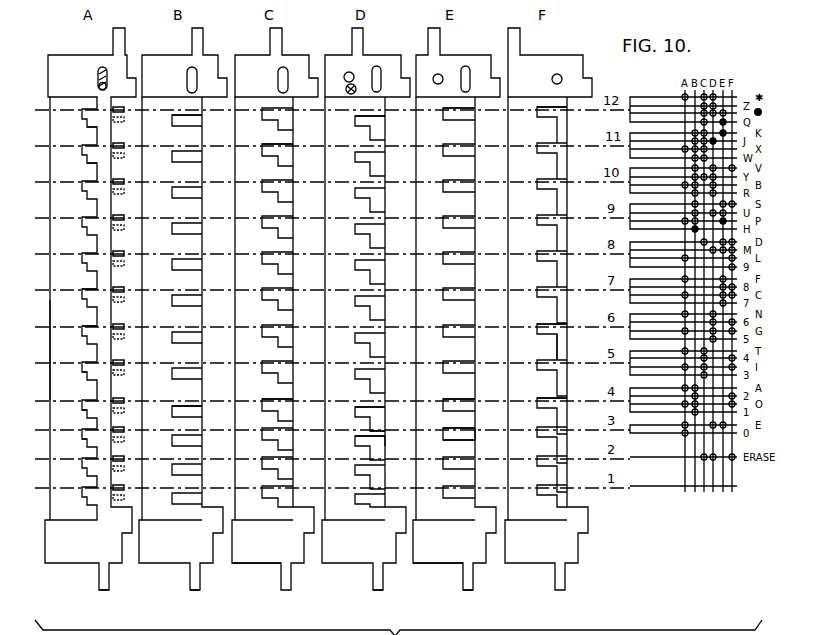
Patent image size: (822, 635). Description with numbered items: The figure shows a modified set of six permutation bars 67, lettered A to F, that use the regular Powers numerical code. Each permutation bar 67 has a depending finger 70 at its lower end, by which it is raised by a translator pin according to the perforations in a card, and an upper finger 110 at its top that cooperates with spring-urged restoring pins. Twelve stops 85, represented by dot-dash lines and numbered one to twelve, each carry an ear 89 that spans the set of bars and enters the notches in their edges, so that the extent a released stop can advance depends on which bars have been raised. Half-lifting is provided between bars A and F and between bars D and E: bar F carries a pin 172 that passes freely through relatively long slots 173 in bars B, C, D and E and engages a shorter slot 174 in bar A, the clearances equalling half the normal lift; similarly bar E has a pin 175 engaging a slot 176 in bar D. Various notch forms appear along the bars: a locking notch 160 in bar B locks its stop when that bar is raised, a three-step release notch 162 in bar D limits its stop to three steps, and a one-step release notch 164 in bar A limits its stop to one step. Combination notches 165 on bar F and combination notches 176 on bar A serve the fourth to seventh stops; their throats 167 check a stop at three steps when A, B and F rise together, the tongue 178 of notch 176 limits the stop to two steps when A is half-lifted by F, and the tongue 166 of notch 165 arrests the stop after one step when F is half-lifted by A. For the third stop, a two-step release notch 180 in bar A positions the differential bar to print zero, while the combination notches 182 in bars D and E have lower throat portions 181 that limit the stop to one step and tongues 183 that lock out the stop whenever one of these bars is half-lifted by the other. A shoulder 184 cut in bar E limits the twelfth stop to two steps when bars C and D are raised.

The upper fingers 110 is at (273, 38).
The ear 89 is at (124, 147).
The shorter slot 174 is at (101, 70).
The pin 172 is at (99, 88).
The relatively long slots 173 is at (185, 68).
The pin 175 is at (347, 73).
The combination notch 176 is at (350, 91).
The one-step release notch 164 is at (100, 122).
The three-step release notch 162 is at (95, 160).
The locking notch 160 is at (193, 118).
The lower throat portions 181 is at (264, 124).
The shoulder 184 is at (455, 120).
The combination notches 182 is at (370, 433).
The tongue 183 is at (386, 433).
The combination notches 165 is at (545, 337).
The tongue 166 is at (560, 340).
The throats 167 is at (556, 390).
The tongue 178 is at (97, 402).
The two-step release notch 180 is at (95, 442).
The stops 85 is at (50, 400).
The depending finger 70 is at (195, 568).
The permutation bars 67 is at (350, 545).